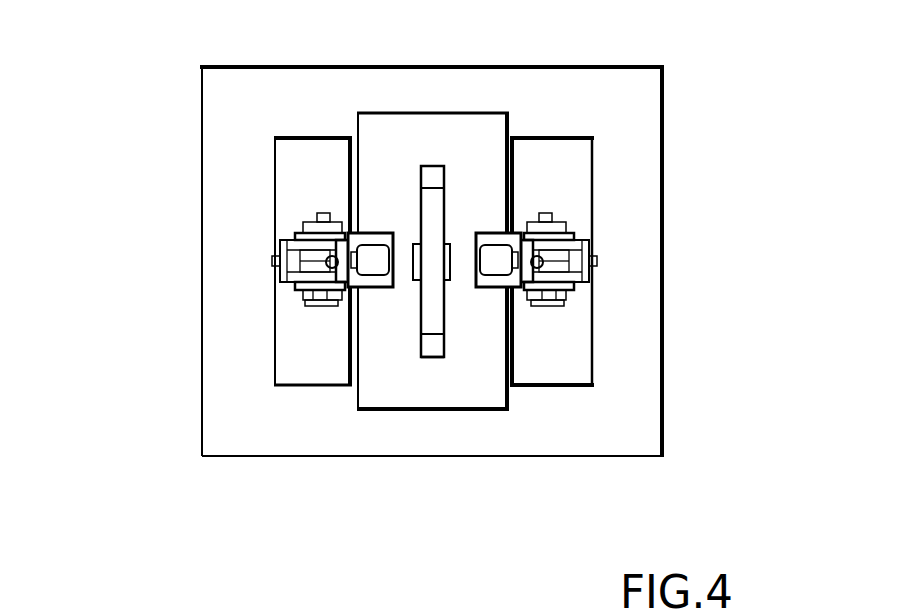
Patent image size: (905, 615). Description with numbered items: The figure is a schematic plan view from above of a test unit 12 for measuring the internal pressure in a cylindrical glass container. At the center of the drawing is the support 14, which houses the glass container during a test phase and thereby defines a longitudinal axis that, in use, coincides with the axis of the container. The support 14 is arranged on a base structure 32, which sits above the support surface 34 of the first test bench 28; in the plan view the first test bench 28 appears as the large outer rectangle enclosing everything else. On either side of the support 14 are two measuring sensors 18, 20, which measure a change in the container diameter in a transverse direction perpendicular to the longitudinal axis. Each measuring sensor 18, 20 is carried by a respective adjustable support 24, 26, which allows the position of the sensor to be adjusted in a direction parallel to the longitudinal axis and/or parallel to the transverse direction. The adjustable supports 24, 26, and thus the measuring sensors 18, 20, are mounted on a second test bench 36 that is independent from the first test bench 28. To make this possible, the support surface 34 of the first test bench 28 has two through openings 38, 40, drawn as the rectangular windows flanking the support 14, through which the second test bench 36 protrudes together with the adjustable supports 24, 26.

The test unit 12 is at (684, 132).
The support 14 is at (448, 238).
The measuring sensor 18 is at (375, 268).
The measuring sensor 20 is at (493, 267).
The adjustable support 24 is at (291, 286).
The adjustable support 26 is at (555, 207).
The first test bench 28 is at (250, 415).
The base structure 32 is at (448, 376).
The support surface 34 is at (420, 433).
The second test bench 36 is at (562, 343).
The through opening 38 is at (290, 393).
The through opening 40 is at (578, 391).